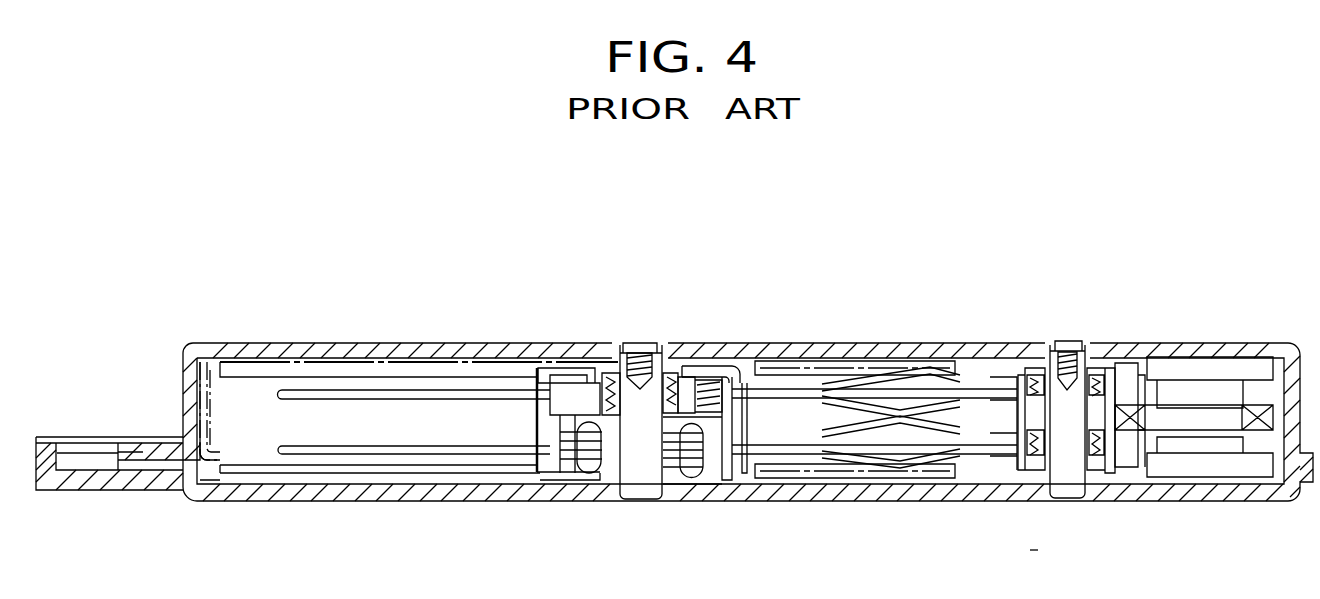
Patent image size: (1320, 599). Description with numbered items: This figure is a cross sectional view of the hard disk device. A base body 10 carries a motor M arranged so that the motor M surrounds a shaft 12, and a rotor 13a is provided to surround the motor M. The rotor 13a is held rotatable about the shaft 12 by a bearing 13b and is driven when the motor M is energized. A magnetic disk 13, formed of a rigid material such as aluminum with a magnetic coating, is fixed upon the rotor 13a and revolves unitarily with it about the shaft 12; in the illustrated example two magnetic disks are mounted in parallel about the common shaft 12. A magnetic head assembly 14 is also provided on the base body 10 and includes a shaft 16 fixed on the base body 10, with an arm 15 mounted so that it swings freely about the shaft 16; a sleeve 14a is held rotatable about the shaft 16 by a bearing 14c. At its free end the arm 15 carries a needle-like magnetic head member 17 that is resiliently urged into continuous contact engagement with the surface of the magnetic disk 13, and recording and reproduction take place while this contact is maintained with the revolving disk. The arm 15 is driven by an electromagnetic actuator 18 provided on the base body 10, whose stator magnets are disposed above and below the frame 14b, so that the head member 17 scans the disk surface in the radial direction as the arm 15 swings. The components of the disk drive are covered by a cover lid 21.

The base body 10 is at (880, 486).
The shaft 12 is at (649, 488).
The magnetic disk 13 is at (447, 393).
The rotor 13a is at (738, 457).
The bearing 13b is at (618, 344).
The motor M is at (612, 455).
The magnetic head assembly 14 is at (1010, 473).
The sleeve 14a is at (1037, 350).
The frame 14b is at (1165, 420).
The bearing 14c is at (1120, 473).
The arm 15 is at (980, 348).
The shaft 16 is at (1076, 490).
The needle-like magnetic head member 17 is at (857, 378).
The electromagnetic actuator 18 is at (1207, 367).
The cover lid 21 is at (892, 347).